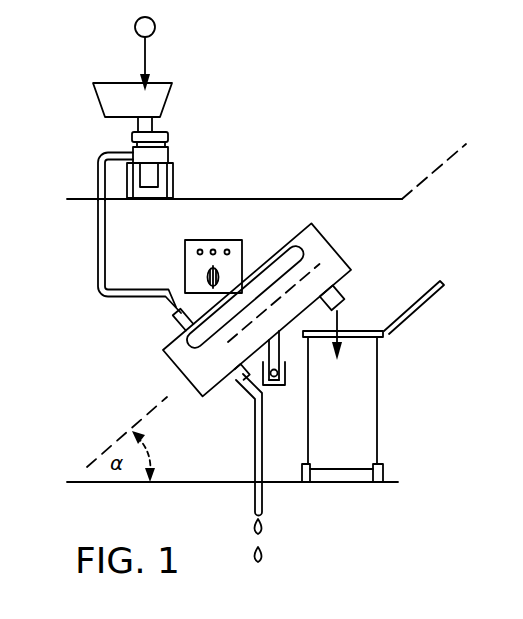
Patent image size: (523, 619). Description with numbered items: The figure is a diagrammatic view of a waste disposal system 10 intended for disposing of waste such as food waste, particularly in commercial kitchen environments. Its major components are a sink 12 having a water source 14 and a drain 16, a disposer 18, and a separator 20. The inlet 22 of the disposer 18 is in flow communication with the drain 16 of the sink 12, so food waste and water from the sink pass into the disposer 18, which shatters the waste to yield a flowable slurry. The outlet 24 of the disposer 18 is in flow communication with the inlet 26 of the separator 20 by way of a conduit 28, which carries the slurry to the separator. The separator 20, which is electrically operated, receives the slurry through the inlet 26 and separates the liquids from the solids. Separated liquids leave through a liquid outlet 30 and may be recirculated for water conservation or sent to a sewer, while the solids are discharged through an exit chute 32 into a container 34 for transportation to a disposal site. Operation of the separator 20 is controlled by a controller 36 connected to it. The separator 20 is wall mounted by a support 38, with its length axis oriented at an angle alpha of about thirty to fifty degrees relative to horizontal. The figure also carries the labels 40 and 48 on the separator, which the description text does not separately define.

The system 10 is at (262, 166).
The sink 12 is at (167, 91).
The water source 14 is at (155, 27).
The drain 16 is at (153, 124).
The disposer 18 is at (173, 155).
The separator 20 is at (294, 359).
The inlet 22 is at (131, 137).
The outlet 24 is at (99, 170).
The inlet 26 is at (182, 318).
The conduit 28 is at (105, 248).
The liquid outlet 30 is at (236, 388).
The exit chute 32 is at (337, 295).
The container 34 is at (362, 414).
The controller 36 is at (233, 240).
The support 38 is at (282, 350).
The housing 40 is at (303, 229).
The window / slot 48 is at (266, 265).